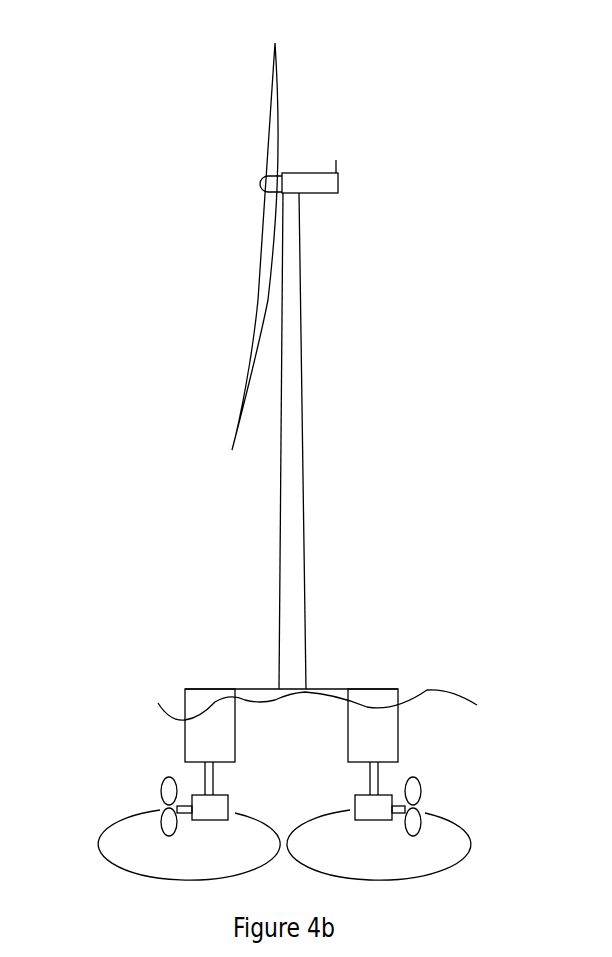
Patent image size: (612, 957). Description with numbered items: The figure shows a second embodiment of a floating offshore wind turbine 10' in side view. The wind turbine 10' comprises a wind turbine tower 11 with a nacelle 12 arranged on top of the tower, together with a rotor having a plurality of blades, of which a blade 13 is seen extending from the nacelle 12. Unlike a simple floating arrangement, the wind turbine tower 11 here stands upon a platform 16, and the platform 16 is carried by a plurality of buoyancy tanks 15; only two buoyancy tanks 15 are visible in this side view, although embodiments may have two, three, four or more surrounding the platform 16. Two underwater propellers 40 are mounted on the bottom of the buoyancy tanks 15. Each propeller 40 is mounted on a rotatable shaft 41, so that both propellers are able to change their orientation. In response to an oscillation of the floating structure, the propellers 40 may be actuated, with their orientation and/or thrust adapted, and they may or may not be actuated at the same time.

The floating wind turbine 10' is at (131, 79).
The wind turbine tower 11 is at (293, 362).
The nacelle 12 is at (305, 183).
The rotor blade 13 is at (268, 224).
The buoyancy tanks 15 is at (205, 745).
The platform 16 is at (245, 690).
The underwater propellers 40 is at (205, 805).
The rotatable shafts 41 is at (372, 778).